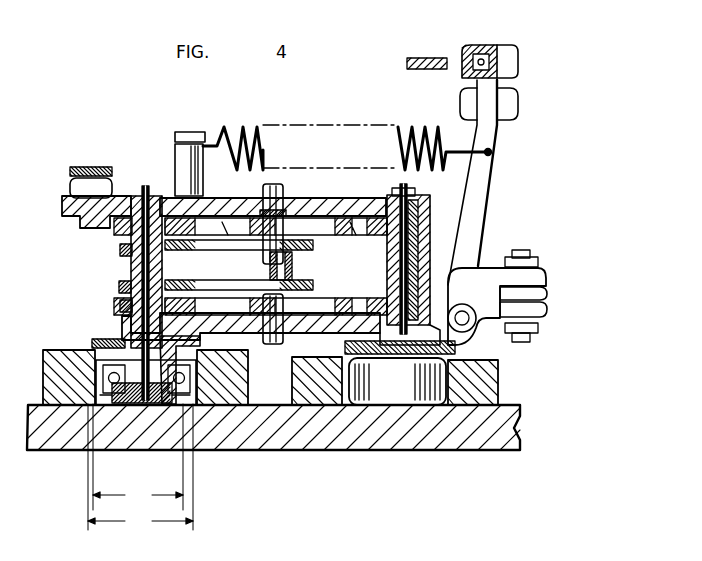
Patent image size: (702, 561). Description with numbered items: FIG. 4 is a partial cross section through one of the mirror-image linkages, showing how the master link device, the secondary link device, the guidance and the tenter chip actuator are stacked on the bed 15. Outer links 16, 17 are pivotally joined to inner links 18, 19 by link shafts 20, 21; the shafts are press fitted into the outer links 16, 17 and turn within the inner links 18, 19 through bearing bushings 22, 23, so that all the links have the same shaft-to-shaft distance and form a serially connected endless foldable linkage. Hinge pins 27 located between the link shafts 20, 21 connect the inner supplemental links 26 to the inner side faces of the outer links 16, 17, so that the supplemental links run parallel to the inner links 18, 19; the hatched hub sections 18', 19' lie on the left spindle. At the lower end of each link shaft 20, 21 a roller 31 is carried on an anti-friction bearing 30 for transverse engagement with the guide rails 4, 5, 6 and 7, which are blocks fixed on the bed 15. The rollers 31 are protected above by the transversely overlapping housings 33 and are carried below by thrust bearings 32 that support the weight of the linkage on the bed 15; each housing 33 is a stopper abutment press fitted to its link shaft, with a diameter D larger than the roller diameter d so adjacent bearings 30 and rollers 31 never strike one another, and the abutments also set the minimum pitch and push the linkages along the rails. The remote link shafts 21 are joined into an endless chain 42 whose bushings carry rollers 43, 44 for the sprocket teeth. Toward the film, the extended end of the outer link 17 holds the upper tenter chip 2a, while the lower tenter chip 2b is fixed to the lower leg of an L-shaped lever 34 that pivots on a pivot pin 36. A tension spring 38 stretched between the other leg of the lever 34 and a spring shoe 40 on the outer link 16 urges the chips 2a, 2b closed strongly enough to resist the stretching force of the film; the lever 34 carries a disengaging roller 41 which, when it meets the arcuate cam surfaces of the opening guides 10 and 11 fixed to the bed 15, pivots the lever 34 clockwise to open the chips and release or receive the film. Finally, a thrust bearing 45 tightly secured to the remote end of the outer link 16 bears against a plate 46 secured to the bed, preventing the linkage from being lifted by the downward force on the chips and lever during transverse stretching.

The bed 15 is at (443, 438).
The guide rail 4 is at (52, 386).
The guide rail 5 is at (241, 378).
The guide rail 6 is at (297, 394).
The guide rail 7 is at (490, 384).
The thrust bearing 32 is at (146, 406).
The anti-friction bearing 30 is at (198, 352).
The diameter of roller d is at (138, 457).
The diameter of housing D is at (140, 468).
The link shaft 21 is at (150, 190).
The roller 43 is at (128, 270).
The endless chain 42 is at (119, 288).
The bearing bushing 23 is at (120, 250).
The upper disc hub 18' is at (108, 235).
The lower disc hub 19' is at (108, 305).
The outer link 17 is at (124, 325).
The housing 33 is at (92, 344).
The outer link 16 is at (318, 206).
The thrust bearing 45 is at (68, 196).
The plate 46 is at (96, 166).
The inner link 18 is at (276, 241).
The inner supplemental link 26 is at (300, 246).
The roller 44 is at (292, 266).
The inner link 19 is at (276, 295).
The hinge pin 27 is at (264, 190).
The spring shoe 40 is at (192, 134).
The tension spring 38 is at (240, 125).
The L-shaped lever 34 is at (483, 206).
The disengaging roller 41 is at (505, 98).
The opening guide 10 is at (420, 77).
The opening guide 11 is at (420, 70).
The bearing bushing 22 is at (430, 260).
The link shaft 20 is at (408, 186).
The pivot pin 36 is at (478, 328).
The upper tenter chip 2a is at (540, 294).
The lower tenter chip 2b is at (540, 312).
The roller 31 is at (355, 405).